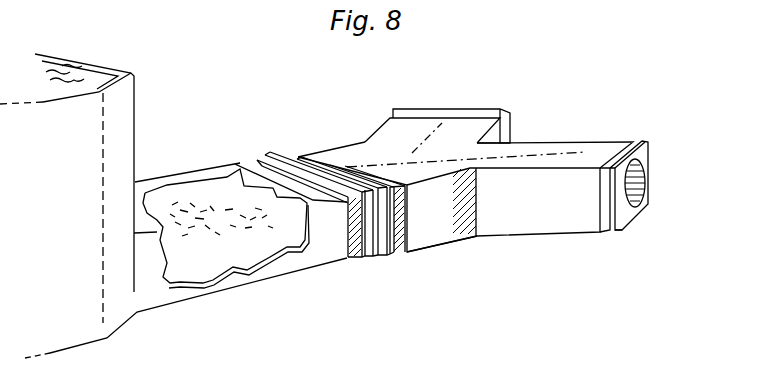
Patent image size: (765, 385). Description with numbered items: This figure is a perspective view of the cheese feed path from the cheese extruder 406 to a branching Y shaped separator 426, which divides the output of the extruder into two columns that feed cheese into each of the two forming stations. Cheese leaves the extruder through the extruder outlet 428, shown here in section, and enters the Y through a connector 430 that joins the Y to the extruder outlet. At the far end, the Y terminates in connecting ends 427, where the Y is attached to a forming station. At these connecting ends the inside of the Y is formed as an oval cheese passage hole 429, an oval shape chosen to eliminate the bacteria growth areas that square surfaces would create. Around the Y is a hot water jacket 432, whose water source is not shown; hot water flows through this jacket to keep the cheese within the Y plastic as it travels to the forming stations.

The cheese extruder 406 is at (138, 113).
The Y shaped separator 426 is at (365, 142).
The connecting ends 427 is at (460, 108).
The section through cheese extruder outlet 428 is at (212, 218).
The oval cheese passage hole 429 is at (676, 135).
The connector Y to extruder outlet 430 is at (372, 250).
The hot water jacket 432 is at (442, 265).